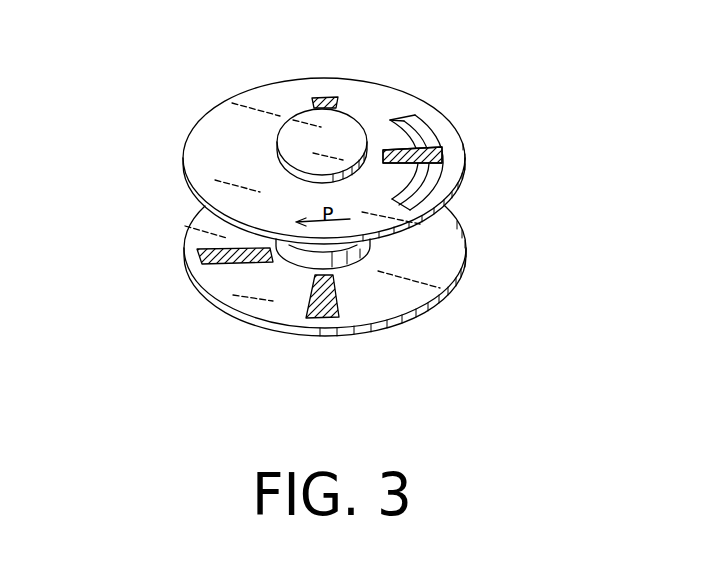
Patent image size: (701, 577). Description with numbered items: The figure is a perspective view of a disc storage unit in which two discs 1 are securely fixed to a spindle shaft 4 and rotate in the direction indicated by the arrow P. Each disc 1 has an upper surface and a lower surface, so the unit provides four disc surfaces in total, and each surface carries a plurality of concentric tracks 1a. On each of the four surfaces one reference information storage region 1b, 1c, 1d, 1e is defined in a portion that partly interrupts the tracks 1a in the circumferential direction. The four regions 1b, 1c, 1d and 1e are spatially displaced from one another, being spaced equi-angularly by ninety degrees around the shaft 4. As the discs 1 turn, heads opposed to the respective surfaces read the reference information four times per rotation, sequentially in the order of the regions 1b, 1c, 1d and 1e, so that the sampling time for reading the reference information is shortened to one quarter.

The disc 1 is at (251, 90).
The concentric tracks 1a is at (418, 123).
The reference information storage region 1b is at (444, 157).
The reference information storage region 1c is at (325, 96).
The reference information storage region 1d is at (200, 257).
The reference information storage region 1e is at (322, 320).
The spindle shaft 4 is at (278, 141).